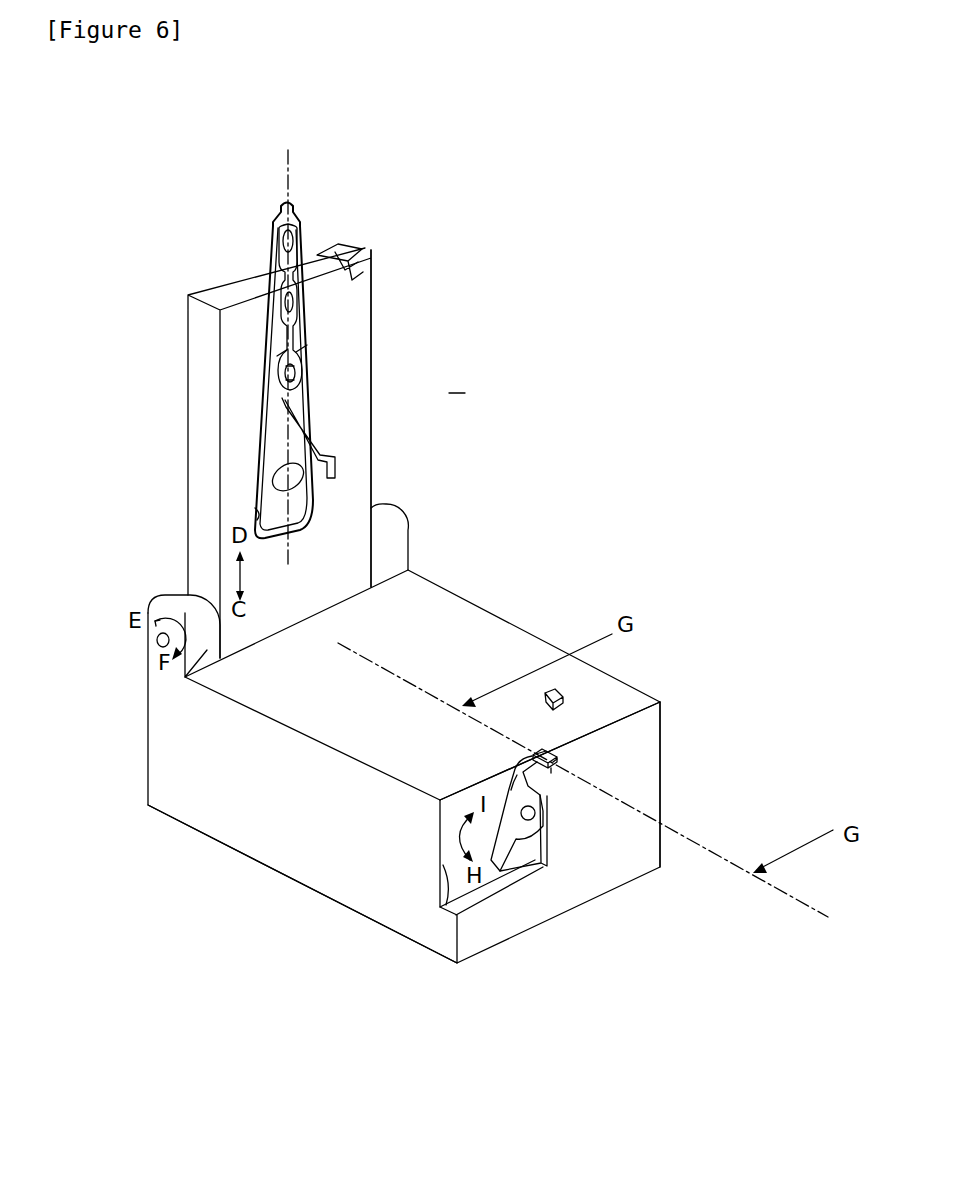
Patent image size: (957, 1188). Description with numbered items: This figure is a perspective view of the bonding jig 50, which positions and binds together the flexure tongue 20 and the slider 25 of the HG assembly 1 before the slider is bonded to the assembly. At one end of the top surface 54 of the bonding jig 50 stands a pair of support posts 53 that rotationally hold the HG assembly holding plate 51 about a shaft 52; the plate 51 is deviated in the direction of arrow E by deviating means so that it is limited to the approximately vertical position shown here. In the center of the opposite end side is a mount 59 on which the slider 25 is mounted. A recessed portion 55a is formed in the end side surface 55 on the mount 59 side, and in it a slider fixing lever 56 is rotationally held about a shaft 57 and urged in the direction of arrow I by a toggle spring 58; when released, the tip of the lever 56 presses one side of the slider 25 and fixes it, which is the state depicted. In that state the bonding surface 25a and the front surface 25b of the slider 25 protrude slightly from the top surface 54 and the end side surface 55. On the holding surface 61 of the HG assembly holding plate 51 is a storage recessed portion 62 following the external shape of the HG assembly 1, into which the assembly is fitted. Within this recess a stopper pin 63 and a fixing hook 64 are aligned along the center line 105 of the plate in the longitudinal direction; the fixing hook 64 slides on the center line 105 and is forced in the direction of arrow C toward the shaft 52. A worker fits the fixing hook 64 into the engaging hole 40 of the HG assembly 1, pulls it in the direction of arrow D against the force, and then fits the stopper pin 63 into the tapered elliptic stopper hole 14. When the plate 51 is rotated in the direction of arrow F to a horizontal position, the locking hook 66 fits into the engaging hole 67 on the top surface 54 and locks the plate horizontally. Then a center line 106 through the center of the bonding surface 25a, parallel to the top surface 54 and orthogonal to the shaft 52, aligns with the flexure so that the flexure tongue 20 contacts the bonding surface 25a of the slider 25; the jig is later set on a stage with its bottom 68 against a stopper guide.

The HG assembly 1 is at (458, 379).
The tapered elliptic stopper hole 14 is at (293, 303).
The flexure tongue 20 is at (293, 232).
The slider 25 is at (556, 752).
The bonding surface 25a is at (536, 750).
The front surface 25b is at (552, 766).
The engaging hole 40 is at (292, 366).
The bonding jig 50 is at (672, 553).
The HG assembly holding plate 51 is at (350, 503).
The shaft 52 is at (157, 640).
The support posts 53 is at (393, 543).
The top surface 54 is at (360, 713).
The end side surface 55 is at (643, 788).
The recessed portion 55a is at (440, 907).
The slider fixing lever 56 is at (496, 868).
The shaft 57 is at (536, 819).
The toggle spring 58 is at (544, 866).
The mount 59 is at (578, 757).
The holding surface 61 is at (240, 374).
The storage recessed portion 62 is at (262, 512).
The stopper pin 63 is at (278, 272).
The fixing hook 64 is at (281, 397).
The locking hook 66 is at (362, 258).
The engaging hole 67 is at (563, 698).
The bottom 68 is at (297, 883).
The center line 105 is at (291, 173).
The center line 106 is at (402, 673).